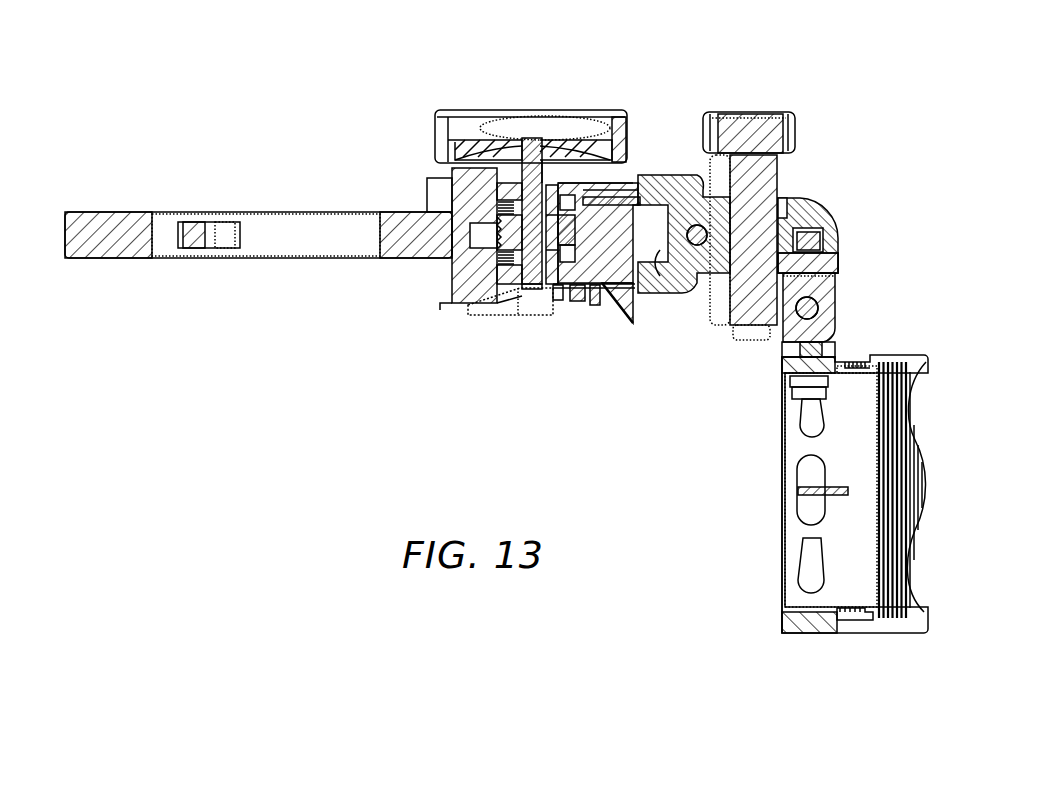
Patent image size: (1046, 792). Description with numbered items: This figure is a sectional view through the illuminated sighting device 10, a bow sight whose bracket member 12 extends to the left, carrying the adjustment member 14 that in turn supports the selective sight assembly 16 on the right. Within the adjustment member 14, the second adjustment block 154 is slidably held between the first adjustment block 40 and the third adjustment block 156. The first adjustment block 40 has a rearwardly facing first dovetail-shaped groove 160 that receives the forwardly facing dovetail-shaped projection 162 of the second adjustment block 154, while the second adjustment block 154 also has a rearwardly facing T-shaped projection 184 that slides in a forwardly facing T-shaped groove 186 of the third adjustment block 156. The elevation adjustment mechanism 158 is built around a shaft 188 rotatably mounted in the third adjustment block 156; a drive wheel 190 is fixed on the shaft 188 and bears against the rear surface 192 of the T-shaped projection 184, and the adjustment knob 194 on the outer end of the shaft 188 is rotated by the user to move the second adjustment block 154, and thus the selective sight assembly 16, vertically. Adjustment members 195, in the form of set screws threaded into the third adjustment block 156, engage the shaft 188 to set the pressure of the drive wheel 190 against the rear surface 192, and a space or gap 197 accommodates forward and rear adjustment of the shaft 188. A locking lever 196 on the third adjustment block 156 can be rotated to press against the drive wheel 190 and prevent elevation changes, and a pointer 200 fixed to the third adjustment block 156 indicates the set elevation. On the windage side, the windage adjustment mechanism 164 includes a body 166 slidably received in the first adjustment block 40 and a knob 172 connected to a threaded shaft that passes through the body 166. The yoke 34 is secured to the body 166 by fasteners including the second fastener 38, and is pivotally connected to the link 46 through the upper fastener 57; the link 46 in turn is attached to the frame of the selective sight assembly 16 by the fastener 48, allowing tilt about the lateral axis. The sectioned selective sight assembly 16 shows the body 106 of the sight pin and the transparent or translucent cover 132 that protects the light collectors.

The illuminated sighting device 10 is at (322, 471).
The bracket member 12 is at (130, 208).
The adjustment member 14 is at (553, 76).
The selective sight assembly 16 is at (745, 520).
The yoke 34 is at (828, 210).
The second fastener 38 is at (838, 240).
The first adjustment block 40 is at (664, 183).
The link 46 is at (830, 325).
The fastener 48 is at (785, 355).
The upper fastener 57 is at (836, 290).
The body 106 is at (805, 490).
The cover 132 is at (853, 622).
The second adjustment block 154 is at (615, 277).
The third adjustment block 156 is at (455, 300).
The elevation adjustment mechanism 158 is at (458, 110).
The first dovetail-shaped groove 160 is at (712, 280).
The dovetail-shaped projection 162 is at (676, 294).
The windage adjustment mechanism 164 is at (750, 106).
The body 166 is at (772, 170).
The knob 172 is at (793, 128).
The T-shaped projection 184 is at (548, 292).
The T-shaped groove 186 is at (630, 183).
The shaft 188 is at (522, 182).
The drive wheel 190 is at (520, 290).
The rear surface 192 is at (537, 291).
The adjustment knob 194 is at (600, 112).
The adjustment members 195 is at (497, 203).
The locking lever 196 is at (472, 304).
The space or gap 197 is at (543, 185).
The pointer 200 is at (580, 298).